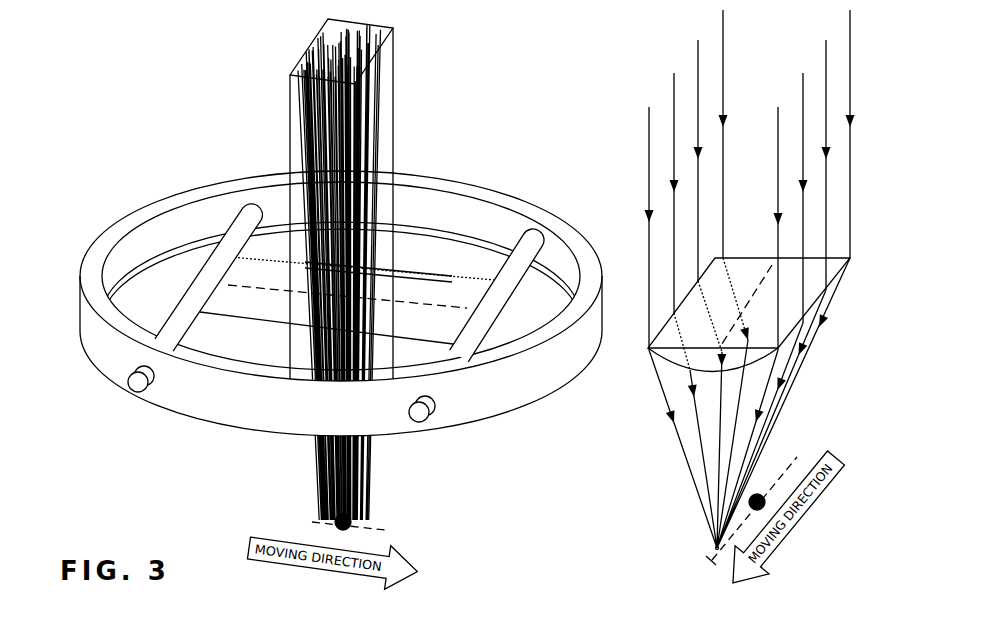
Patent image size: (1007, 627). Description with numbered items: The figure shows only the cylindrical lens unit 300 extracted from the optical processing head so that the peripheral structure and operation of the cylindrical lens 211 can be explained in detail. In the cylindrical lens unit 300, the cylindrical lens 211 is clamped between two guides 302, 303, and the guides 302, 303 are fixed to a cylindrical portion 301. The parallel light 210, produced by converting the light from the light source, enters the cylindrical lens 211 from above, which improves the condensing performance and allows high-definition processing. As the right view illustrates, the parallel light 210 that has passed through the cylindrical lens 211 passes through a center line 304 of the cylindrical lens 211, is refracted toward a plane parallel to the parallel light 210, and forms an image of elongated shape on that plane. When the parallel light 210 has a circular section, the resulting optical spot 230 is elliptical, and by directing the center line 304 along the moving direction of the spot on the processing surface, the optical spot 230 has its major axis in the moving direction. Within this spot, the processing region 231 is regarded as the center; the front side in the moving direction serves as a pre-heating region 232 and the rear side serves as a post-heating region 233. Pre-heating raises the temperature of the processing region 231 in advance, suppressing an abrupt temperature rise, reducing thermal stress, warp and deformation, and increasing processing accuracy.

The parallel light 210 is at (363, 120).
The cylindrical lens 211 is at (648, 350).
The optical spot 230 is at (728, 528).
The processing region 231 is at (382, 513).
The pre-heating region 232 is at (712, 544).
The post-heating region 233 is at (305, 515).
The cylindrical lens unit 300 is at (205, 160).
The cylindrical portion 301 is at (148, 206).
The guide 302 is at (180, 314).
The guide 303 is at (517, 277).
The center line 304 is at (433, 300).